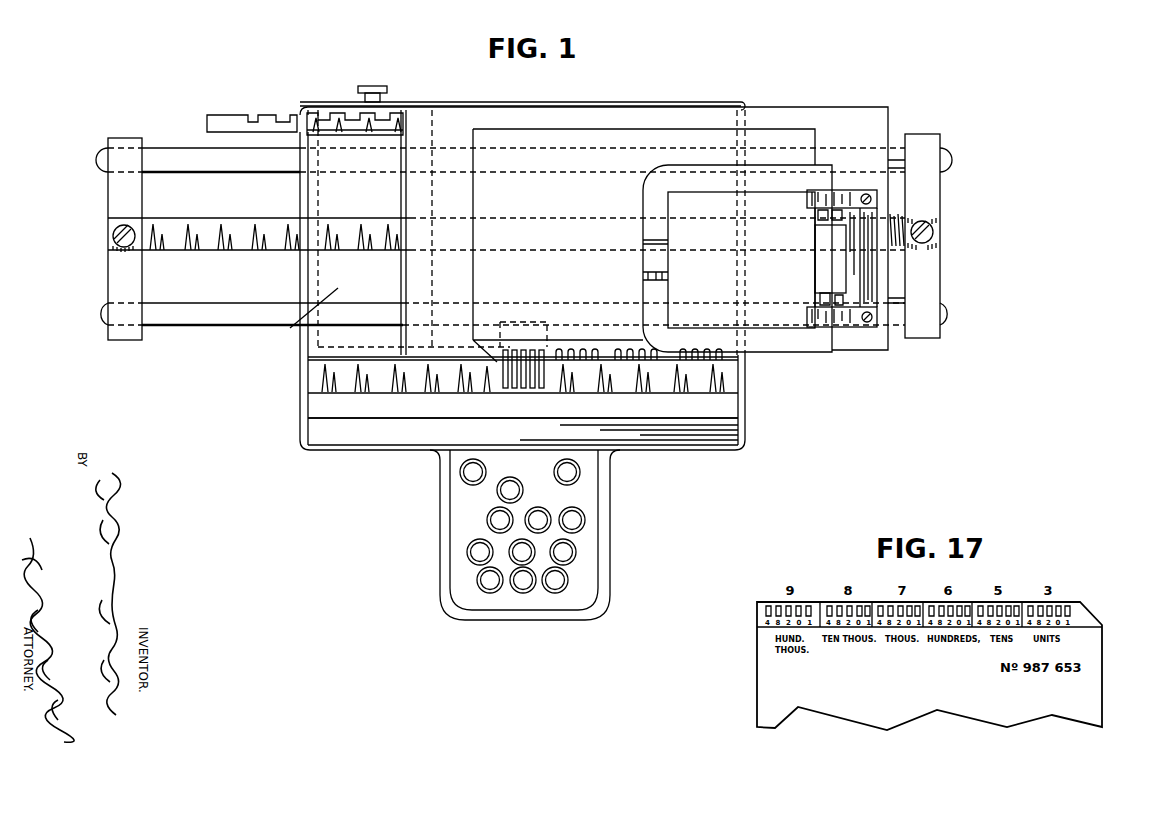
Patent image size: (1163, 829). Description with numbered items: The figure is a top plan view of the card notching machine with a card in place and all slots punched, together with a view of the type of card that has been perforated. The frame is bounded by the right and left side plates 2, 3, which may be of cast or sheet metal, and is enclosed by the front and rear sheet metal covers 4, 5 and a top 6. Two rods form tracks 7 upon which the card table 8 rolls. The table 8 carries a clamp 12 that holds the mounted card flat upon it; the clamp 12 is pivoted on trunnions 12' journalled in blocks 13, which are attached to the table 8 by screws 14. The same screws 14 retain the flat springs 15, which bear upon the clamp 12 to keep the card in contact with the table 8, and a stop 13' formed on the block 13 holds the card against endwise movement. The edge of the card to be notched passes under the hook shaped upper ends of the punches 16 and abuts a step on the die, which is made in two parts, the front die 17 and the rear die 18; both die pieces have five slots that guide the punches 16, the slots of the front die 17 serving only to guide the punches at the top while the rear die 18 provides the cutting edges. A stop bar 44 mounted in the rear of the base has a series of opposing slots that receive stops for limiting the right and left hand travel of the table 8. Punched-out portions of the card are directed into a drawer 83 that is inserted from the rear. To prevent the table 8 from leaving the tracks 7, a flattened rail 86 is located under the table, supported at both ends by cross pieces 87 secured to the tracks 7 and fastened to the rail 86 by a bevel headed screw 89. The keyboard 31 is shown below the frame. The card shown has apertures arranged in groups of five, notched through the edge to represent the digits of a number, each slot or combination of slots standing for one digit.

The right side plate 2 is at (746, 394).
The left side plate 3 is at (300, 382).
The front sheet metal cover 4 is at (308, 431).
The rear sheet metal cover 5 is at (684, 104).
The top 6 is at (295, 326).
The tracks 7 is at (194, 170).
The card table 8 is at (834, 108).
The clamp 12 is at (717, 258).
The trunnions 12' is at (836, 285).
The blocks 13 is at (846, 257).
The stop 13' is at (807, 226).
The screws 14 is at (866, 193).
The flat springs 15 is at (861, 328).
The punches 16 is at (507, 390).
The front die 17 is at (388, 388).
The rear die 18 is at (372, 360).
The keyboard 31 is at (466, 553).
The stop bar 44 is at (243, 120).
The drawer 83 is at (318, 262).
The flattened rail 86 is at (252, 247).
The cross pieces 87 is at (110, 142).
The bevel headed screw 89 is at (934, 226).